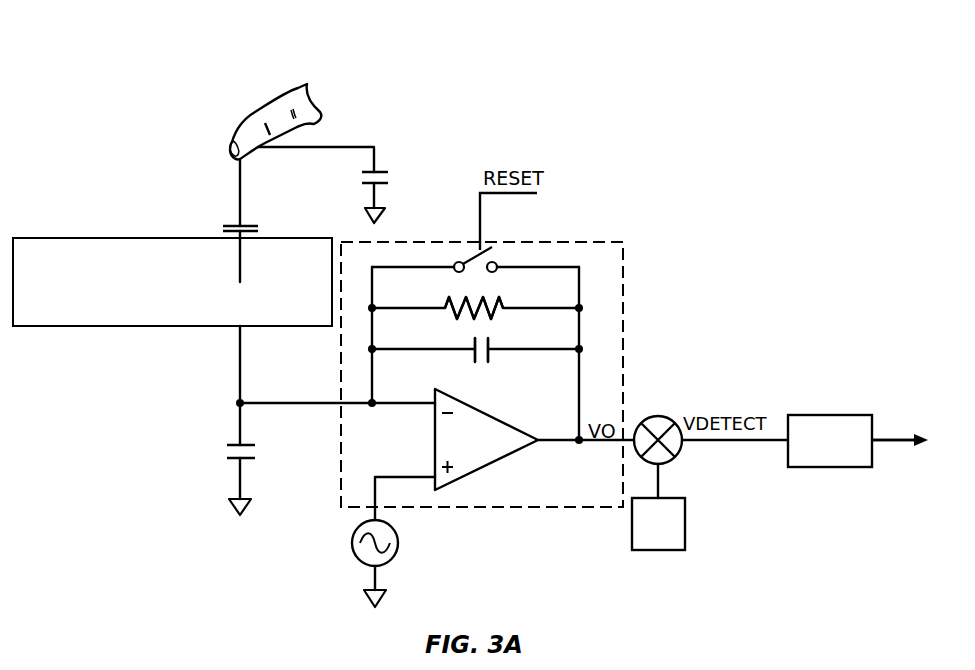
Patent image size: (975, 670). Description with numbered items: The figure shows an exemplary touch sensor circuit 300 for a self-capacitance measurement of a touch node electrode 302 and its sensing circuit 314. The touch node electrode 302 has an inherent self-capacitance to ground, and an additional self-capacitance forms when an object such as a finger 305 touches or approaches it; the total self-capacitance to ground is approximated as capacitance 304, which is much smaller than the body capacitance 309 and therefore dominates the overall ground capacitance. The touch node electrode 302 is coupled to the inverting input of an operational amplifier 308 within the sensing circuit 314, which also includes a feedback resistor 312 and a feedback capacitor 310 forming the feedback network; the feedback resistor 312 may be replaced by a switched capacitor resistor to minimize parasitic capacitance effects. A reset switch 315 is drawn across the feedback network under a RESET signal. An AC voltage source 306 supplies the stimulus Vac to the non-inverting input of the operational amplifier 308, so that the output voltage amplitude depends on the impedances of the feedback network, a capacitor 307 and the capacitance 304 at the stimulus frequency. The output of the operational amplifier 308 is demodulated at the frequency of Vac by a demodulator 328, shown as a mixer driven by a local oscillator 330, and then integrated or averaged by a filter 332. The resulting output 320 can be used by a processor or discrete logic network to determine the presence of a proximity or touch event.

The touch sensor circuit 300 is at (186, 78).
The touch node electrode 302 is at (240, 270).
The capacitance 304 is at (252, 226).
The finger 305 is at (268, 100).
The AC voltage source 306 is at (400, 543).
The capacitor 307 is at (222, 448).
The operational amplifier 308 is at (483, 470).
The body capacitance 309 is at (388, 178).
The feedback capacitor 310 is at (490, 346).
The feedback resistor 312 is at (501, 300).
The sensing circuit 314 is at (572, 242).
The reset switch 315 is at (462, 261).
The output 320 is at (893, 438).
The demodulator 328 is at (655, 414).
The local oscillator 330 is at (658, 552).
The filter 332 is at (830, 414).